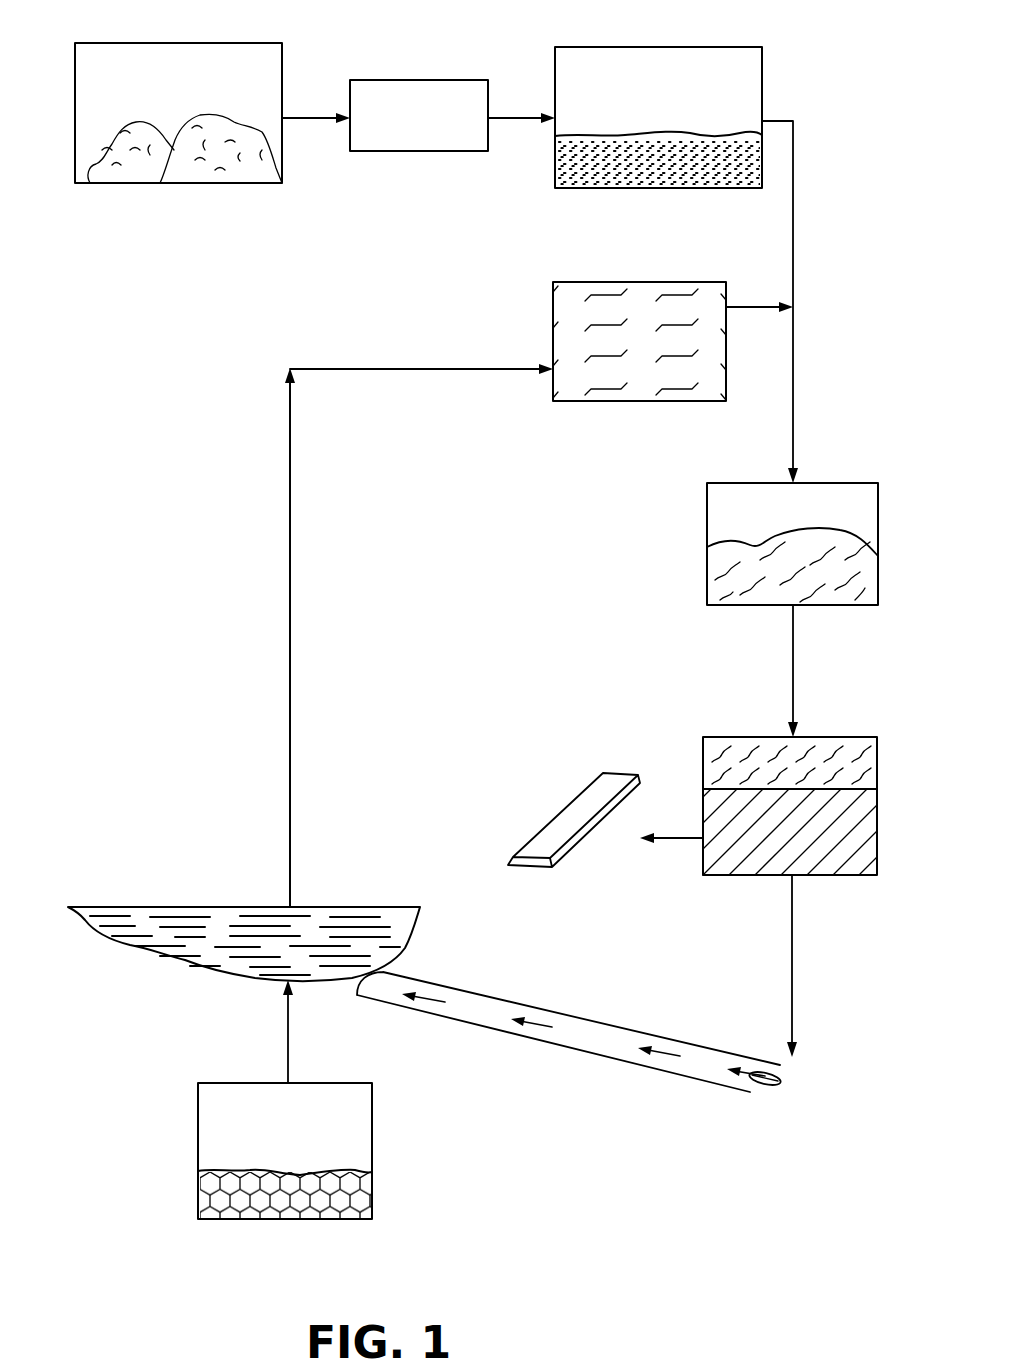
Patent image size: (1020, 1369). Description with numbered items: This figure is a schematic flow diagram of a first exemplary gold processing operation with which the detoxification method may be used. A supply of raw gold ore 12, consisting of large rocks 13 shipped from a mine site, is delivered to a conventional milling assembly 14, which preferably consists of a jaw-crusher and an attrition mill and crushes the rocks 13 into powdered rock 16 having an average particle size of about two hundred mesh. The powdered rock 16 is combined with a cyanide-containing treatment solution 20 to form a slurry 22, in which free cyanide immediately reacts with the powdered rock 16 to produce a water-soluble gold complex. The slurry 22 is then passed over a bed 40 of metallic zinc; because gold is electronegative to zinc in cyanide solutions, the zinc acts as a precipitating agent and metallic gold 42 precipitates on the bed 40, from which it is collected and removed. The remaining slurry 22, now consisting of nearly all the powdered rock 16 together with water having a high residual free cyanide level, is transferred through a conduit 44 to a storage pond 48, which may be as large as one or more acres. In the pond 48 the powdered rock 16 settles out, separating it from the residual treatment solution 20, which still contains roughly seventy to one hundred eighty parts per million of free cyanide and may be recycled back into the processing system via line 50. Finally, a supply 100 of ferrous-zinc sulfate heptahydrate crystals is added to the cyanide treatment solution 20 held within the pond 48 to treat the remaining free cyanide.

The supply of raw gold ore 12 is at (178, 118).
The large rocks 13 is at (217, 175).
The milling assembly 14 is at (437, 151).
The powdered rock 16 is at (624, 172).
The cyanide-containing treatment solution 20 is at (553, 304).
The slurry 22 is at (848, 605).
The bed of metallic zinc 40 is at (757, 860).
The metallic gold 42 is at (533, 865).
The conduit 44 is at (622, 1052).
The storage pond 48 is at (190, 950).
The line 50 is at (290, 600).
The supply of (Fe·Zn)SO4·7H2O crystals 100 is at (327, 1195).